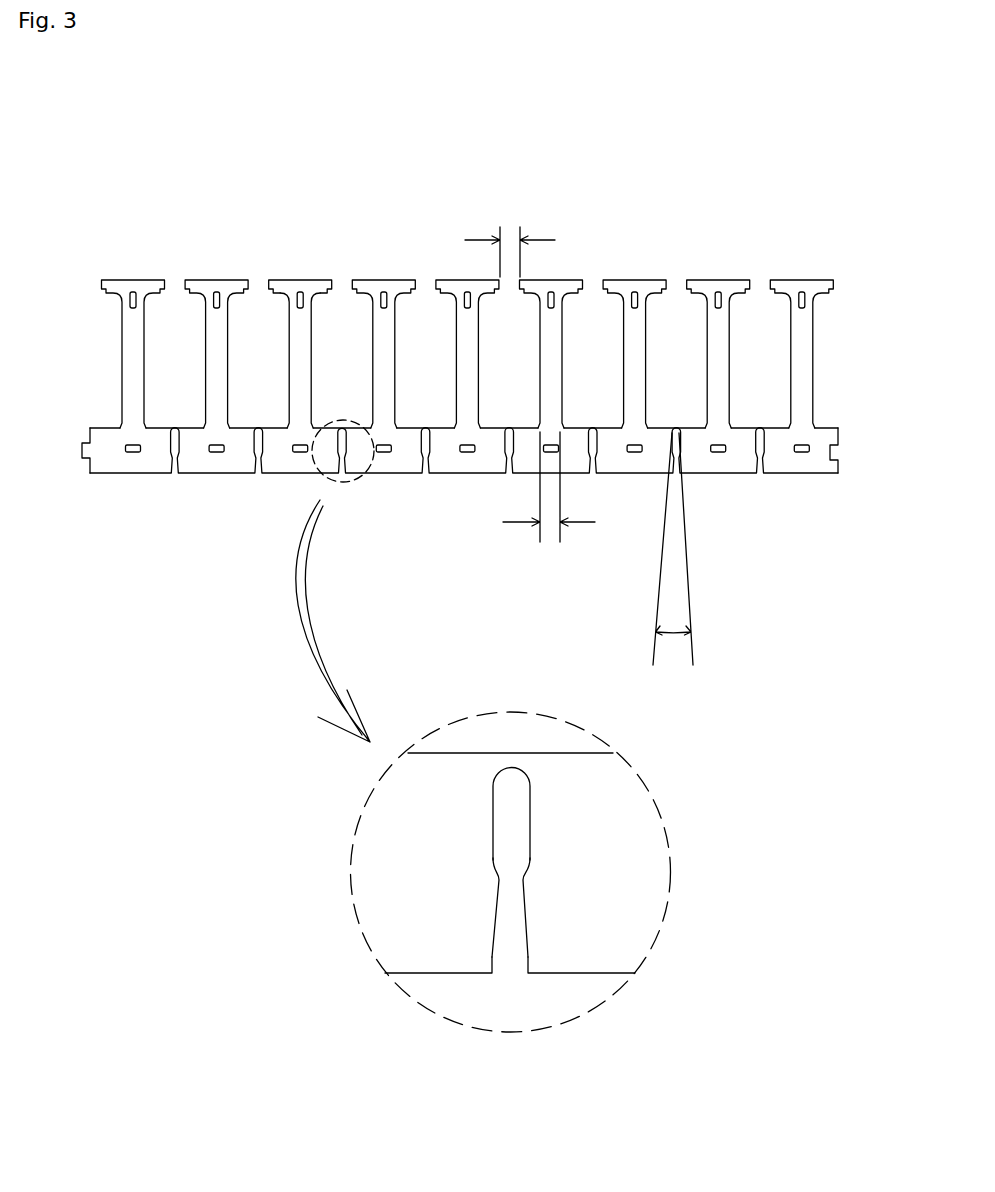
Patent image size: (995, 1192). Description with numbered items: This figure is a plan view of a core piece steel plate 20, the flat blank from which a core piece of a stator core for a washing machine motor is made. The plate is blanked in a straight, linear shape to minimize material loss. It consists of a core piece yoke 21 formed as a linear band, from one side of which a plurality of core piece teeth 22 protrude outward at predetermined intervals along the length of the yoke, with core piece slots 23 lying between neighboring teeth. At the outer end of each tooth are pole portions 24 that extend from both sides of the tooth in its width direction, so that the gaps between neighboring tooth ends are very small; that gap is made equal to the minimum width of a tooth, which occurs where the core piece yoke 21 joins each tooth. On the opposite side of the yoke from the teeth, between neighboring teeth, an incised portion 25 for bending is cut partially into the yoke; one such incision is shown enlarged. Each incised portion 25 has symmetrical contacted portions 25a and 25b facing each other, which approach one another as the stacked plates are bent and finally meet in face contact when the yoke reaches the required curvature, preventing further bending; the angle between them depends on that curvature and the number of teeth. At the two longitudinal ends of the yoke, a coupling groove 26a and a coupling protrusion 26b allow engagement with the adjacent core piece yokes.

The core piece steel plate 20 is at (161, 117).
The core piece yoke 21 is at (220, 463).
The core piece teeth 22 is at (301, 352).
The core piece slots 23 is at (263, 323).
The pole portions 24 is at (299, 285).
The incised portion for bending 25 is at (512, 840).
The contacted portion 25a is at (493, 957).
The contacted portion 25b is at (527, 957).
The coupling groove 26a is at (832, 452).
The coupling protrusion 26b is at (82, 452).